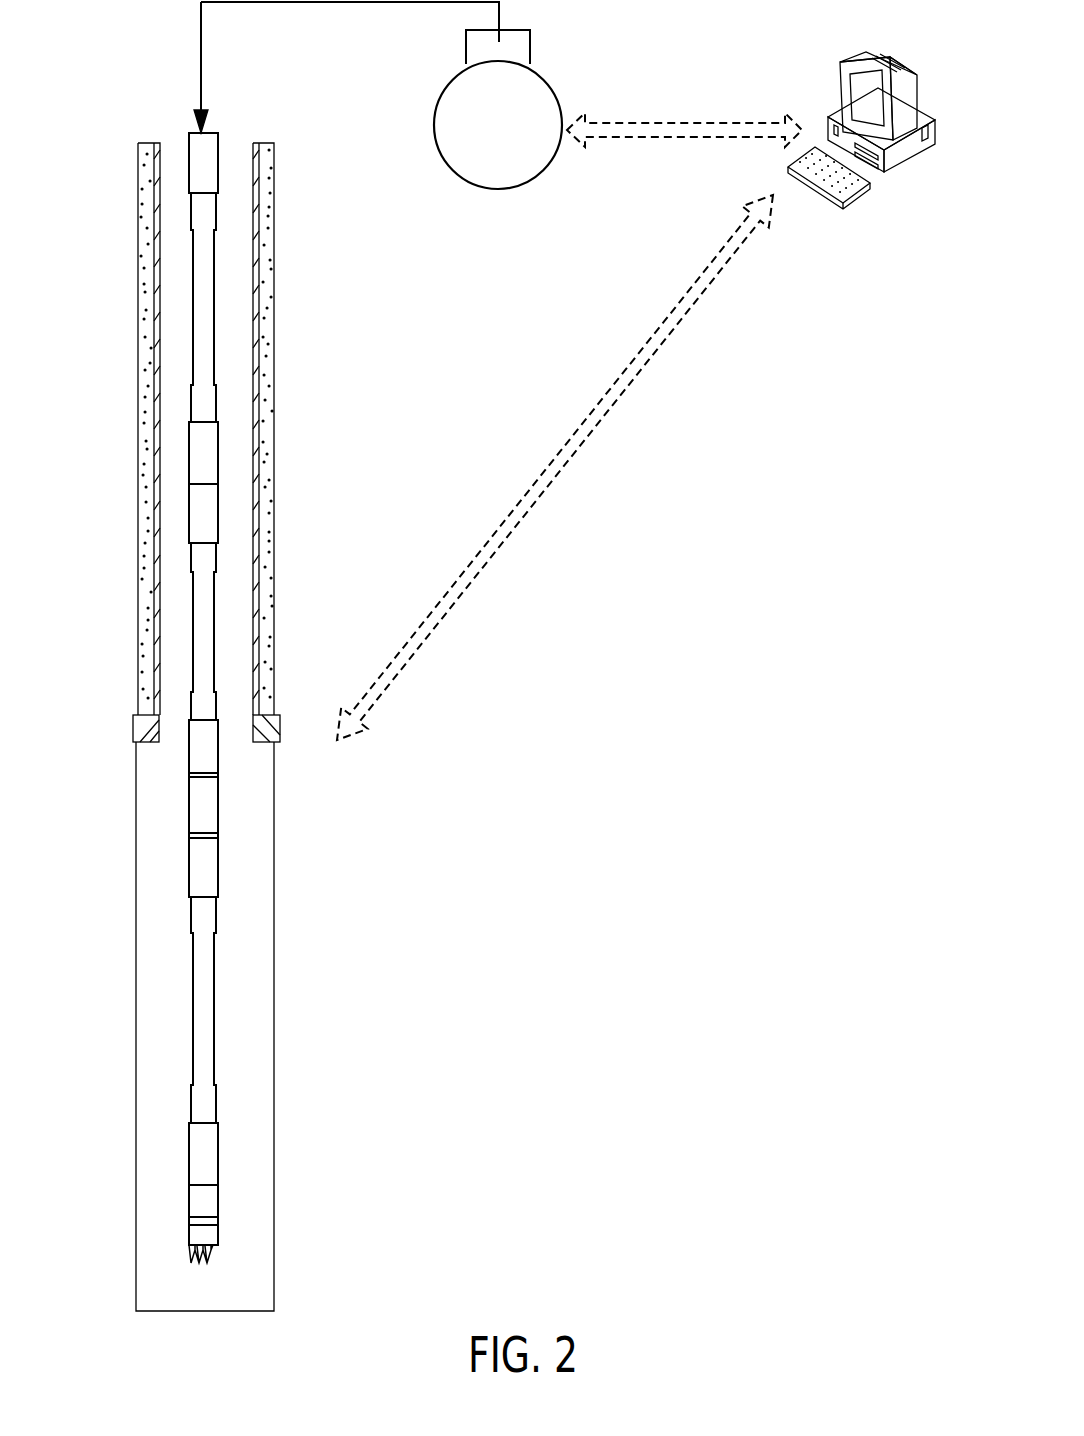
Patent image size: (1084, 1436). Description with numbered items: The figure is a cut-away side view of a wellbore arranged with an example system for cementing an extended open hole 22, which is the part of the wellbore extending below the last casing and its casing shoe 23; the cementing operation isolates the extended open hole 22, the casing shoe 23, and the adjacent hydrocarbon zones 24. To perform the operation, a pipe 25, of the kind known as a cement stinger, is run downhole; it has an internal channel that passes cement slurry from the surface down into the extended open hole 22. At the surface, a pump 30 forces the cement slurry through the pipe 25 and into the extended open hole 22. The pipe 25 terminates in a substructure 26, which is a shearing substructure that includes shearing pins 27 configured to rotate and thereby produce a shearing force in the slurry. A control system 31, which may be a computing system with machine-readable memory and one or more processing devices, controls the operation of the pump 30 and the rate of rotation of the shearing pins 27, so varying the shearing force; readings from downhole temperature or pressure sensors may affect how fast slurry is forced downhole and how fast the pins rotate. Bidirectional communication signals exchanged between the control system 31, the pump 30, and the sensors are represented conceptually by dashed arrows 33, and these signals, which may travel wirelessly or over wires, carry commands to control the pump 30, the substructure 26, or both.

The extended open hole 22 is at (115, 748).
The casing shoe 23 is at (132, 727).
The adjacent hydrocarbon zones 24 is at (266, 727).
The pipe 25 is at (205, 1037).
The substructure 26 is at (207, 1235).
The shearing pins 27 is at (212, 1248).
The pump 30 is at (552, 88).
The control system 31 is at (897, 172).
The dashed arrows 33 is at (641, 142).